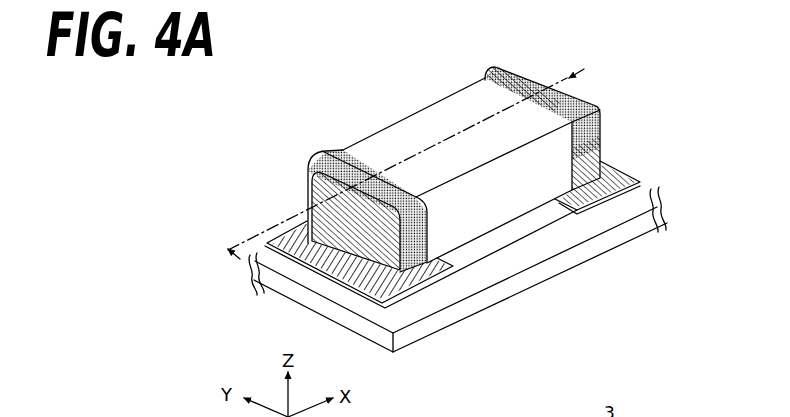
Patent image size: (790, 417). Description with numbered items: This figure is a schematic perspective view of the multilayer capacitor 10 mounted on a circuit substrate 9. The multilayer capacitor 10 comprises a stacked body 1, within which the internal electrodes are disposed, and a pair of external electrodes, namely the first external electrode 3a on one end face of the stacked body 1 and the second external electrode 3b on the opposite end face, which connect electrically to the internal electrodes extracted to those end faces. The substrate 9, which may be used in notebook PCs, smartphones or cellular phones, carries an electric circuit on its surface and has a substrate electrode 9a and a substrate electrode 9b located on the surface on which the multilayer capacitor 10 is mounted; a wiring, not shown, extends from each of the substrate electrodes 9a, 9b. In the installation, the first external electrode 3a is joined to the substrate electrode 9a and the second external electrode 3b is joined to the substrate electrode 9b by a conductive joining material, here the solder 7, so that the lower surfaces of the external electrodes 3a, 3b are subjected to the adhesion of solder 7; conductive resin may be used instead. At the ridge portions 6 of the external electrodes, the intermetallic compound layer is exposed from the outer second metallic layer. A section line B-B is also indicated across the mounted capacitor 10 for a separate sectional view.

The stacked body 1 is at (420, 137).
The first external electrode 3a is at (305, 190).
The second external electrode 3b is at (543, 76).
The ridge portions 6 is at (338, 279).
The solder 7 is at (287, 281).
The substrate 9 is at (565, 258).
The substrate electrode 9a is at (450, 265).
The substrate electrode 9b is at (590, 213).
The multilayer capacitor 10 is at (672, 66).